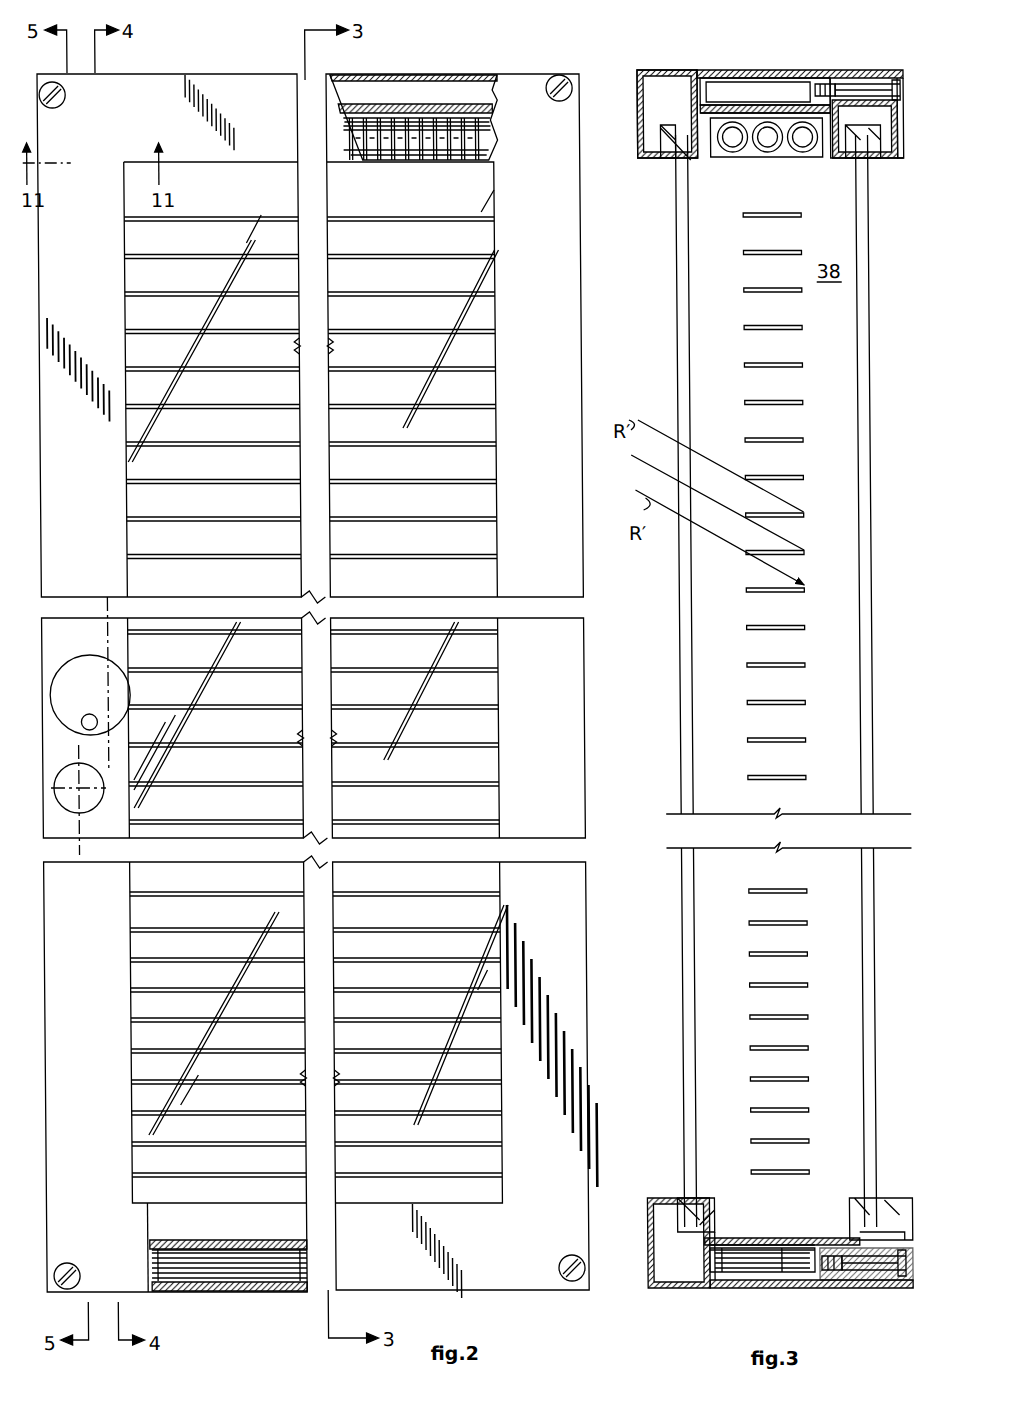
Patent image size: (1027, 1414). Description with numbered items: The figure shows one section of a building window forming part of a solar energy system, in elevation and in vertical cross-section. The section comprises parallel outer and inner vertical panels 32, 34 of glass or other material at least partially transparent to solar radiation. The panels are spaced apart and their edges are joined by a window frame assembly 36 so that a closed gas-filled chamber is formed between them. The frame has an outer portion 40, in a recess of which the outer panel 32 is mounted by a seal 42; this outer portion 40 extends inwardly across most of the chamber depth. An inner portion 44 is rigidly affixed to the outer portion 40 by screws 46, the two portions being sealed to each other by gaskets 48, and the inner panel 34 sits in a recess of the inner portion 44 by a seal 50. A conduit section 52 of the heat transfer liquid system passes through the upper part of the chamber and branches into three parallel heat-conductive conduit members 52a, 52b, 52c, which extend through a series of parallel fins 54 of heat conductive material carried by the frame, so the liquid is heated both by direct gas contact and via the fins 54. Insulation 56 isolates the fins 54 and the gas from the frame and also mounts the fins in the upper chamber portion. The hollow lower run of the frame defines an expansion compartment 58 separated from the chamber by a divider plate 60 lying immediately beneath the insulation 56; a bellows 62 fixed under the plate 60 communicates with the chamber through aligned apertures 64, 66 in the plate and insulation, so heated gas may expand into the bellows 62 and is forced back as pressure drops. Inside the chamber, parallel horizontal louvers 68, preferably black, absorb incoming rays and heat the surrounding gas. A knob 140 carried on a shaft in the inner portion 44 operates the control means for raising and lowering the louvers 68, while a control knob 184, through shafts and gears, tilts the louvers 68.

In FIG. 3, the outer vertical panel 32 is at (680, 312).
In FIG. 2, the inner vertical panel 34 is at (474, 275).
In FIG. 3, the inner vertical panel 34 is at (863, 296).
In FIG. 3, the window frame assembly 36 is at (808, 60).
In FIG. 3, the outer portion 40 is at (664, 70).
In FIG. 3, the seal 42 is at (670, 138).
In FIG. 3, the inner portion 44 is at (890, 70).
In FIG. 2, the screws 46 is at (65, 97).
In FIG. 3, the screws 46 is at (868, 84).
In FIG. 3, the gaskets 48 is at (842, 78).
In FIG. 3, the seal 50 is at (866, 140).
In FIG. 2, the conduit section 52 is at (408, 131).
In FIG. 3, the conduit member 52a is at (722, 122).
In FIG. 3, the conduit member 52b is at (757, 125).
In FIG. 2, the conduit member 52c is at (452, 132).
In FIG. 3, the conduit member 52c is at (802, 150).
In FIG. 2, the fins 54 is at (365, 127).
In FIG. 3, the fins 54 is at (748, 152).
In FIG. 2, the insulation 56 is at (207, 1239).
In FIG. 3, the insulation 56 is at (705, 104).
In FIG. 3, the expansion compartment 58 is at (770, 1276).
In FIG. 2, the divider plate 60 is at (232, 1248).
In FIG. 3, the divider plate 60 is at (730, 1255).
In FIG. 2, the bellows 62 is at (228, 1266).
In FIG. 3, the bellows 62 is at (747, 1262).
In FIG. 2, the apertures 64 is at (180, 1262).
In FIG. 3, the apertures 64 is at (782, 1249).
In FIG. 2, the apertures 66 is at (160, 1250).
In FIG. 3, the apertures 66 is at (772, 1246).
In FIG. 3, the louvers 68 is at (800, 661).
In FIG. 2, the knob 140 is at (76, 669).
In FIG. 2, the control knob 184 is at (87, 806).